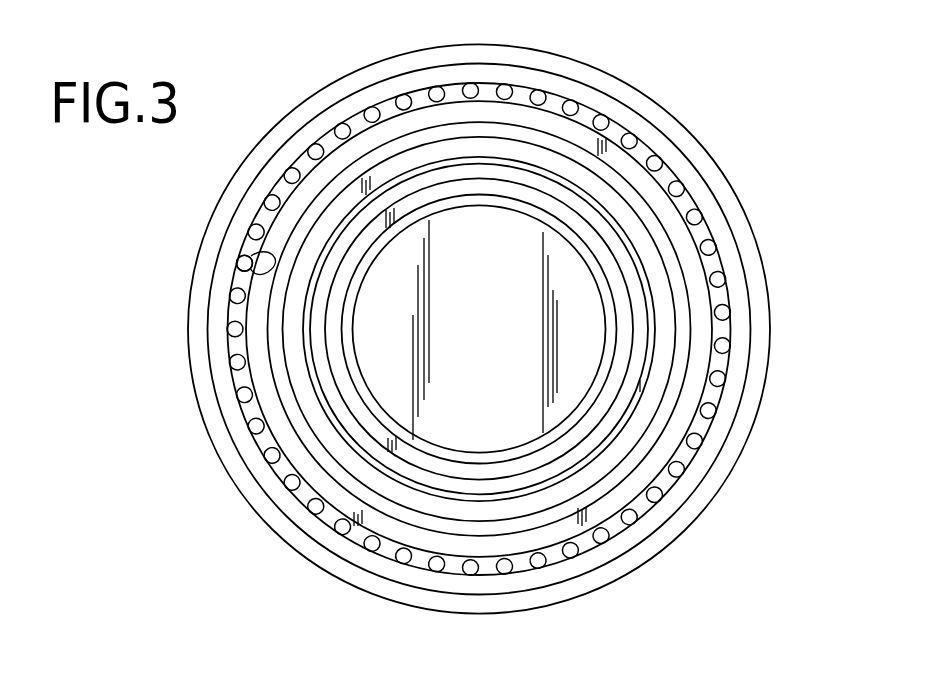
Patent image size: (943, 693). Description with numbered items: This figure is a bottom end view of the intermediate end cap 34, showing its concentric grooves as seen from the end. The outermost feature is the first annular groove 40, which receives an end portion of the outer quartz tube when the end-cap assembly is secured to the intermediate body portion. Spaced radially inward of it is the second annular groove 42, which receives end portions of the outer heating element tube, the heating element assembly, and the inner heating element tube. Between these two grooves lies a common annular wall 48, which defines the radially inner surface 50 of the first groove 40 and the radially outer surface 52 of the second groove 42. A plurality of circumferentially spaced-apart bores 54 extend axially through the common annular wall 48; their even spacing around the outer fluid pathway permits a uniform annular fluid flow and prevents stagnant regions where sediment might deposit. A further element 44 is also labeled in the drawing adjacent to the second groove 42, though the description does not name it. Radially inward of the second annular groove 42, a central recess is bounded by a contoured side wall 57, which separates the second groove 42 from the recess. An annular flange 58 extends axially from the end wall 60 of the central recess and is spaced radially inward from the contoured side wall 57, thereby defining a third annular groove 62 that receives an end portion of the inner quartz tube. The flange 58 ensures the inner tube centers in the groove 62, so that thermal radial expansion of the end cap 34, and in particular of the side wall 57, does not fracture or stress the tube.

The intermediate end cap 34 is at (683, 117).
The first annular groove 40 is at (700, 188).
The second annular groove 42 is at (700, 297).
The shield layer 44 is at (677, 363).
The common annular wall 48 is at (332, 138).
The radially inner surface 50 is at (280, 182).
The radially outer surface 52 is at (242, 265).
The bores 54 is at (597, 125).
The contoured side wall 57 is at (607, 423).
The annular flange 58 is at (377, 420).
The end wall 60 is at (501, 222).
The third annular groove 62 is at (335, 370).